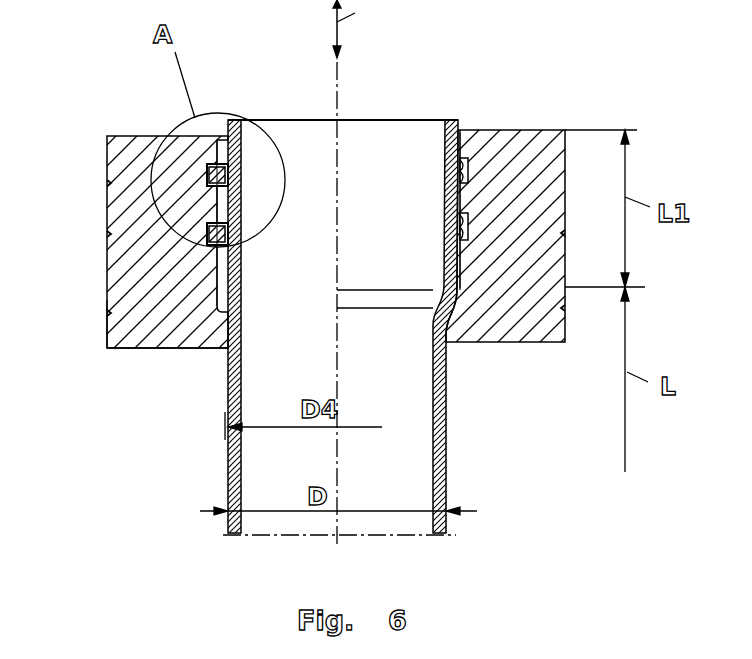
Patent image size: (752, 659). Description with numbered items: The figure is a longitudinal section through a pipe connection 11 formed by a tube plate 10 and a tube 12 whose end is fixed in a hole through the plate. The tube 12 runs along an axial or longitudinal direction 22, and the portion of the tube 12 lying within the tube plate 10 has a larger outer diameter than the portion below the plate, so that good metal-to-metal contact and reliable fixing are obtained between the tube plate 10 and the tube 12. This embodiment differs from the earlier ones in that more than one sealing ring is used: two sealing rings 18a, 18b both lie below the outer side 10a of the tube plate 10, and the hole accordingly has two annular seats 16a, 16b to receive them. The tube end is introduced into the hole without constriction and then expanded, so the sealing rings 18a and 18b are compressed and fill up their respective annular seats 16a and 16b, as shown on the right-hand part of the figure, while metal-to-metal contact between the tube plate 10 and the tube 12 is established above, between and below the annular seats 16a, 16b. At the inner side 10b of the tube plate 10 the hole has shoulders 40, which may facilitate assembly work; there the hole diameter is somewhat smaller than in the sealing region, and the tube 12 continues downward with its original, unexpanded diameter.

The tube plate 10 is at (539, 150).
The outer side of tube plate 10a is at (136, 131).
The inner side of tube plate 10b is at (135, 348).
The pipe connection 11 is at (214, 355).
The tube 12 is at (446, 465).
The first annular seat 16a is at (207, 178).
The second annular seat 16b is at (207, 237).
The first sealing ring 18a is at (215, 176).
The second sealing ring 18b is at (215, 235).
The axial direction 22 is at (368, 29).
The shoulders 40 is at (458, 345).